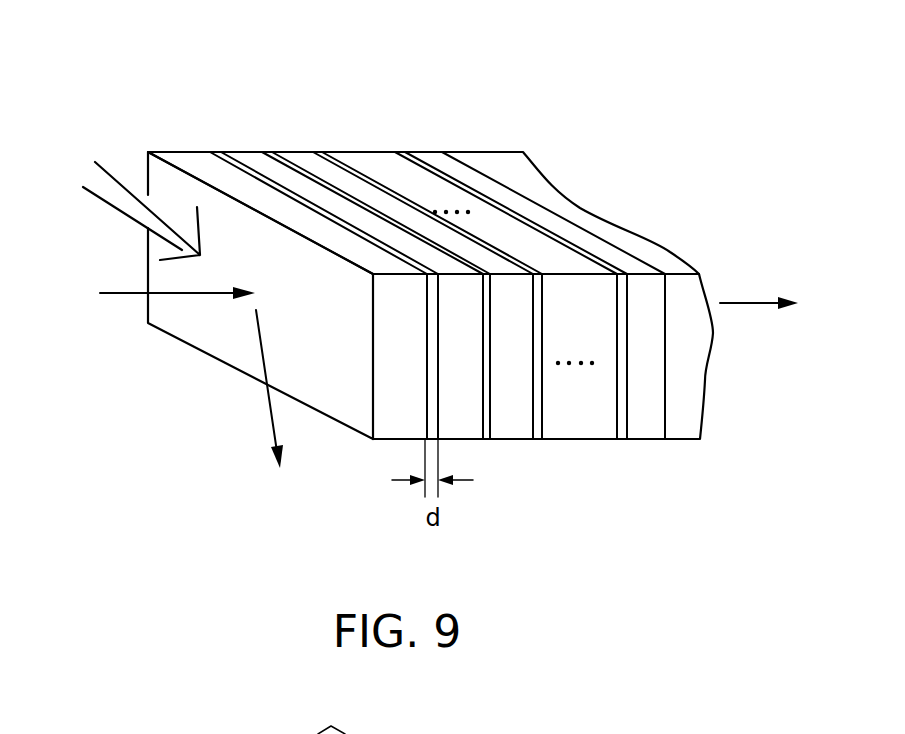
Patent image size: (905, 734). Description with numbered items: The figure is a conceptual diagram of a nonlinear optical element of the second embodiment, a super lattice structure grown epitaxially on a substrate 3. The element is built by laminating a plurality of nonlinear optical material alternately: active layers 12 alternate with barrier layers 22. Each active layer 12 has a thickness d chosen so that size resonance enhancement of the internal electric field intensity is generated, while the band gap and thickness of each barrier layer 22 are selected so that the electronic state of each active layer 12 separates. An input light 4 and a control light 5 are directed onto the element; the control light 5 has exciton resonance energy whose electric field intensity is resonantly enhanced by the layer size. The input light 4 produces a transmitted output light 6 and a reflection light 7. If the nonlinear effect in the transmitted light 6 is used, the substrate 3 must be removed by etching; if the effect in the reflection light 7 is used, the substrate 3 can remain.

The substrate 3 is at (490, 158).
The active layer 12 is at (213, 151).
The barrier layer 22 is at (170, 151).
The input light 4 is at (138, 297).
The control light 5 is at (137, 210).
The output light 6 is at (752, 300).
The reflection light 7 is at (268, 412).